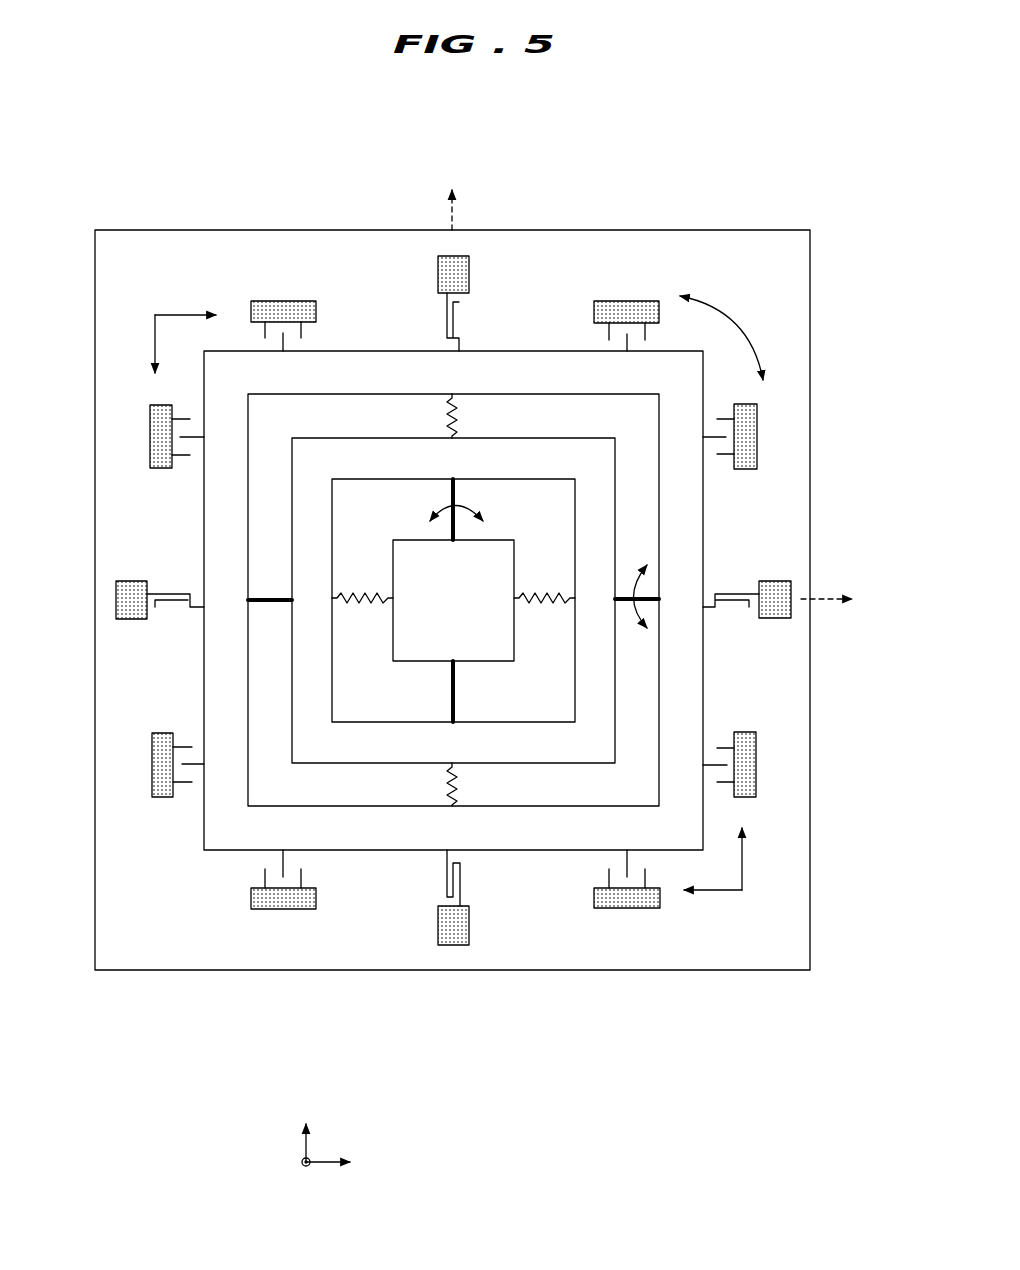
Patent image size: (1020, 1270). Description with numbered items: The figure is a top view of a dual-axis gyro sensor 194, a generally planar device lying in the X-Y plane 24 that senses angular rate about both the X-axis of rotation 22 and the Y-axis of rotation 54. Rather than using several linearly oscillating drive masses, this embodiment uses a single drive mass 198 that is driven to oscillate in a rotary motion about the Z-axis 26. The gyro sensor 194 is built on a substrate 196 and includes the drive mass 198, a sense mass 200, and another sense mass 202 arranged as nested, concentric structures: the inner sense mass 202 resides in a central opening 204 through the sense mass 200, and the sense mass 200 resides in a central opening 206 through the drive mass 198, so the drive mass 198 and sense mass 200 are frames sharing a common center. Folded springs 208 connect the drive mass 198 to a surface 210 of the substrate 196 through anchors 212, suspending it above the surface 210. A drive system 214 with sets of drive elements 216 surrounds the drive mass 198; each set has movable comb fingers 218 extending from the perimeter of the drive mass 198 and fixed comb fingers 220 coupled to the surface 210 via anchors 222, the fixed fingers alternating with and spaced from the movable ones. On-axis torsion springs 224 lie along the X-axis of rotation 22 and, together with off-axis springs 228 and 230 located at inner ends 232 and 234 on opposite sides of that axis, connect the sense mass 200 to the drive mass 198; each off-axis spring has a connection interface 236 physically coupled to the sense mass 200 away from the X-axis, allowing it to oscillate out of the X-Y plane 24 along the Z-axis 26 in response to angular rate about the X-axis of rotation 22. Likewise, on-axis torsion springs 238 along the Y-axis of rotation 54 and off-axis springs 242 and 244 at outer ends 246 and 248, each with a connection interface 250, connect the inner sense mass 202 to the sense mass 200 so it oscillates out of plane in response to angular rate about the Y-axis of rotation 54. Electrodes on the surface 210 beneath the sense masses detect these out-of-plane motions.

The dual-axis gyro sensor 194 is at (573, 1054).
The substrate 196 is at (177, 233).
The drive mass 198 is at (519, 365).
The sense mass 200 is at (554, 450).
The sense mass 202 is at (453, 600).
The central opening 204 is at (556, 538).
The central opening 206 is at (266, 794).
The folded springs 208 is at (445, 335).
The surface 210 is at (543, 935).
The anchors 212 is at (448, 256).
The drive system 214 is at (688, 272).
The drive elements 216 is at (155, 315).
The movable comb fingers 218 is at (283, 350).
The fixed comb fingers 220 is at (263, 333).
The anchors 222 is at (301, 312).
The on-axis torsion springs 224 is at (272, 598).
The off-axis spring 228 is at (460, 412).
The off-axis spring 230 is at (459, 786).
The inner end 232 is at (381, 437).
The inner end 234 is at (405, 765).
The connection interface 236 is at (448, 440).
The on-axis torsion springs 238 is at (458, 484).
The off-axis spring 242 is at (357, 613).
The off-axis spring 244 is at (545, 612).
The outer end 246 is at (393, 548).
The outer end 248 is at (515, 552).
The connection interface 250 is at (393, 593).
The X-axis of rotation 22 is at (830, 600).
The X-Y plane 24 is at (308, 1133).
The Z-axis 26 is at (300, 1165).
The Y-axis of rotation 54 is at (455, 214).